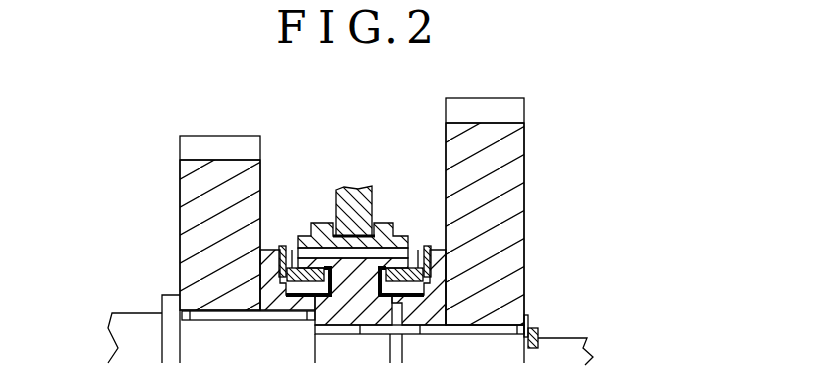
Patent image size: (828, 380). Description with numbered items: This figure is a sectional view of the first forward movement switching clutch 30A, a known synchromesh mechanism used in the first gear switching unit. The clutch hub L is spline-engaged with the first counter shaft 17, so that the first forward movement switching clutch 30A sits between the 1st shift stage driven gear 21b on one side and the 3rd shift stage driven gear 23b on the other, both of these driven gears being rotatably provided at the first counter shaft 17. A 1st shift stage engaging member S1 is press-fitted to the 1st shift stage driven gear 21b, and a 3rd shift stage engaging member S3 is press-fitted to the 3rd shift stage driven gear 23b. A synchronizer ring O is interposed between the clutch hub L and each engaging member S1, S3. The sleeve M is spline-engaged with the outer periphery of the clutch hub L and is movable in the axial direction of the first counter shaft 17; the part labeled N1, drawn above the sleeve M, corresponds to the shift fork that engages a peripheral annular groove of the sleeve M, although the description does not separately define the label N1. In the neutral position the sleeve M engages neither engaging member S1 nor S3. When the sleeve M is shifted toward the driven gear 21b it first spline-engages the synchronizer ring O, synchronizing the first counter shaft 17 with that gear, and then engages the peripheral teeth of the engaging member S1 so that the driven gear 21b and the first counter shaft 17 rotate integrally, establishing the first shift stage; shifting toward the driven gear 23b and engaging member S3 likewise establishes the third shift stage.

The 3rd shift stage driven gear 23b is at (188, 222).
The 1st shift stage driven gear 21b is at (515, 197).
The first forward movement switching clutch 30A is at (342, 148).
The sleeve M is at (323, 234).
The nut N1 is at (352, 210).
The 3rd shift stage engaging member S3 is at (270, 262).
The 1st shift stage engaging member S1 is at (436, 250).
The synchronizer ring O is at (310, 280).
The clutch hub L is at (360, 323).
The first counter shaft 17 is at (557, 354).